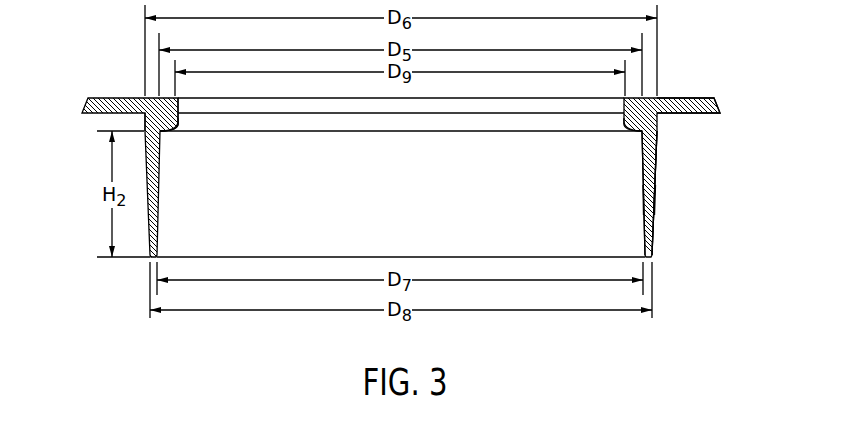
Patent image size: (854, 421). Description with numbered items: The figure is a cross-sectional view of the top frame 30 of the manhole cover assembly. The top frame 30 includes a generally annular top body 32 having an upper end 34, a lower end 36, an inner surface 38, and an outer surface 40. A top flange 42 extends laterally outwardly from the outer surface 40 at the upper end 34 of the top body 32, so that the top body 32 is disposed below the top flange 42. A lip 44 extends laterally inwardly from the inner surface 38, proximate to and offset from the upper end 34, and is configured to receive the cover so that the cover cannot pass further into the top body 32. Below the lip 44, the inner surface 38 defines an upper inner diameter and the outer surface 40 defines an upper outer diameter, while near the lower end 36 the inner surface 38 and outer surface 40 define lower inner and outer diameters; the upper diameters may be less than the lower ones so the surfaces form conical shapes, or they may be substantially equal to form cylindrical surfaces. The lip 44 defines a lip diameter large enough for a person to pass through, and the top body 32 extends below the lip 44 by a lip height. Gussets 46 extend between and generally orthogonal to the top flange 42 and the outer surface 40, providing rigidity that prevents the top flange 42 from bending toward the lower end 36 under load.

The top frame 30 is at (102, 88).
The top body 32 is at (645, 173).
The upper end 34 is at (400, 98).
The lower end 36 is at (400, 257).
The inner surface 38 is at (647, 209).
The outer surface 40 is at (650, 221).
The top flange 42 is at (694, 108).
The lip 44 is at (141, 113).
The gussets 46 is at (143, 117).